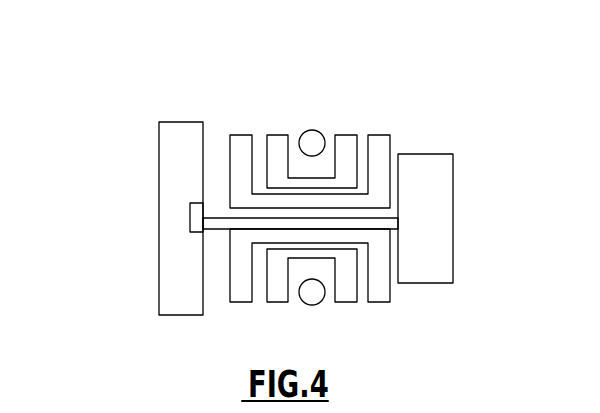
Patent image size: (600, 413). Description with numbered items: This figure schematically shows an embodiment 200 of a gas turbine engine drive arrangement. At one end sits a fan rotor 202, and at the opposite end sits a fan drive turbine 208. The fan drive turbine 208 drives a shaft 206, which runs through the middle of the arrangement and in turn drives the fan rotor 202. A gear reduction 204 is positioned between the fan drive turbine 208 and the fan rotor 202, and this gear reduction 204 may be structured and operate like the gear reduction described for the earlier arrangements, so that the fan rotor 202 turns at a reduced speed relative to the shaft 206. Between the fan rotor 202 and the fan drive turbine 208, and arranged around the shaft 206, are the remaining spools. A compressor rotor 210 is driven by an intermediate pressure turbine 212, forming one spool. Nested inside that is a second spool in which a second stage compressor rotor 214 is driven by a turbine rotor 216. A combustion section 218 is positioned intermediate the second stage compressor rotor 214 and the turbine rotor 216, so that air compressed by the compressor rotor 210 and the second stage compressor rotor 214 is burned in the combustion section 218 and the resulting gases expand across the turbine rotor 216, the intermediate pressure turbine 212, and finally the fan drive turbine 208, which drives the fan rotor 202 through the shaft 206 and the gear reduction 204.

The embodiment 200 is at (135, 108).
The fan rotor 202 is at (172, 166).
The gear reduction 204 is at (190, 228).
The shaft 206 is at (380, 175).
The fan drive turbine 208 is at (440, 200).
The compressor rotor 210 is at (240, 280).
The intermediate pressure turbine 212 is at (380, 225).
The second stage compressor rotor 214 is at (276, 138).
The turbine rotor 216 is at (346, 138).
The combustion section 218 is at (313, 131).